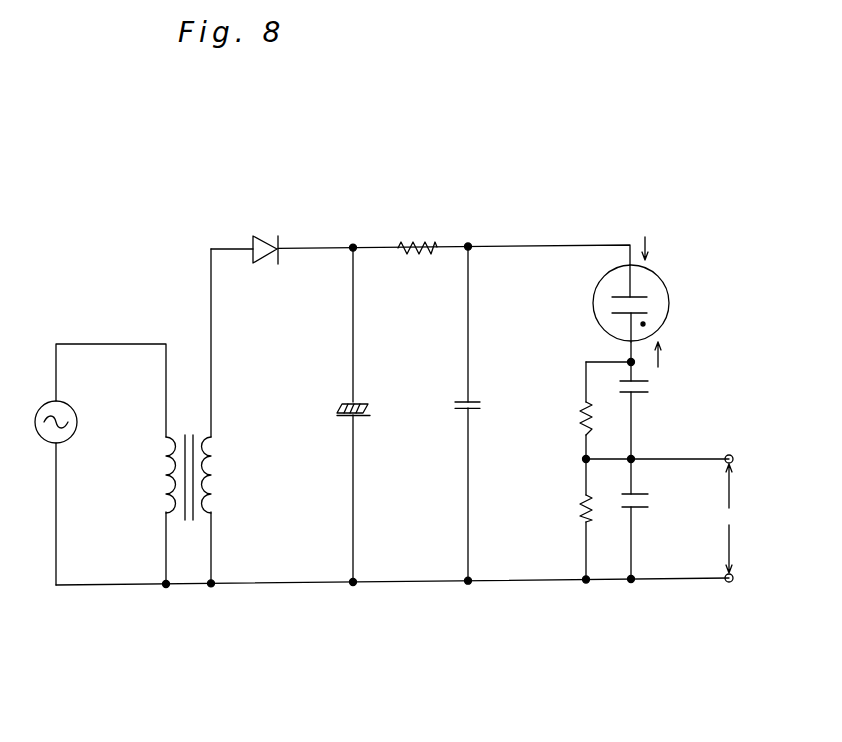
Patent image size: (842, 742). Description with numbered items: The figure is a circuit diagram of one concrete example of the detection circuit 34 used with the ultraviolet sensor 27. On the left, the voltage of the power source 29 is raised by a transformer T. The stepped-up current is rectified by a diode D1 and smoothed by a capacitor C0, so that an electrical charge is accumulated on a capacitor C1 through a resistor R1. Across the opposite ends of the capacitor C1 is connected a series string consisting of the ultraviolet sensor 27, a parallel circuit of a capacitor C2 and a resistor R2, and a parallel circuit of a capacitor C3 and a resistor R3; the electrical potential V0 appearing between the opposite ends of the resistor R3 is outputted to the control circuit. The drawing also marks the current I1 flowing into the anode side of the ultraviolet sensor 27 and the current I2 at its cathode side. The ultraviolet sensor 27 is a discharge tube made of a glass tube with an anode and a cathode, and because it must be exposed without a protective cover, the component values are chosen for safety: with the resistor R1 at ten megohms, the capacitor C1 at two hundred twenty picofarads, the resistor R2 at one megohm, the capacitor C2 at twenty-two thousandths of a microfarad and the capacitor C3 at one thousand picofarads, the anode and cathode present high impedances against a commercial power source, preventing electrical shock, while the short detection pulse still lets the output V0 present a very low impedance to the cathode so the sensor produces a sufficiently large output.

The ultraviolet sensor 27 is at (670, 292).
The power source 29 is at (77, 427).
The detection circuit 34 is at (425, 590).
The transformer T is at (188, 522).
The diode D1 is at (261, 241).
The resistor R1 is at (423, 242).
The capacitor C0 is at (335, 407).
The capacitor C1 is at (453, 407).
The capacitor C2 is at (648, 383).
The capacitor C3 is at (647, 499).
The resistor R2 is at (580, 407).
The resistor R3 is at (580, 505).
The current I1 is at (659, 249).
The current I2 is at (670, 354).
The electrical potential V0 is at (748, 518).